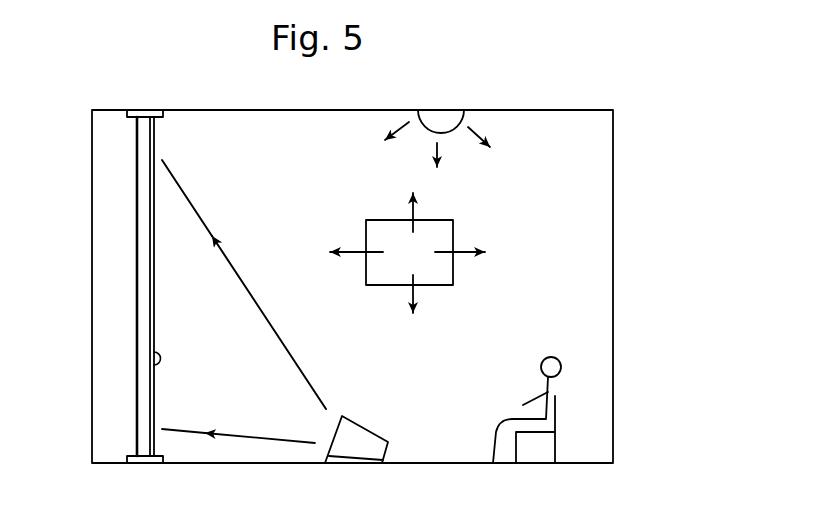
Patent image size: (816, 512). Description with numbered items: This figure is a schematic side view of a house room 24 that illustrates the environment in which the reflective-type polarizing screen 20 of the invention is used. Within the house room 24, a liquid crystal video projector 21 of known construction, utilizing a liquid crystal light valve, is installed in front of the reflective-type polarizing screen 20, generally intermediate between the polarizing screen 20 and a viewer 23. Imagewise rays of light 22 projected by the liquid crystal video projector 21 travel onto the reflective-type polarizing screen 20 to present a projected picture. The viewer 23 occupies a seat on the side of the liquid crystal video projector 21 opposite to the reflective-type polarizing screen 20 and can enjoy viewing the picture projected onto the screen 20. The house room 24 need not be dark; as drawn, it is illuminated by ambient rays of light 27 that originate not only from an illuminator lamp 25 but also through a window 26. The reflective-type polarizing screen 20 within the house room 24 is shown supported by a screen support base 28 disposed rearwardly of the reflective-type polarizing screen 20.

The reflective-type polarizing screen 20 is at (156, 360).
The liquid crystal video projector 21 is at (363, 435).
The imagewise rays of light 22 is at (280, 313).
The viewer 23 is at (527, 393).
The house room 24 is at (606, 202).
The illuminator lamp 25 is at (450, 125).
The window 26 is at (453, 277).
The ambient rays of light 27 is at (352, 250).
The screen support base 28 is at (140, 415).